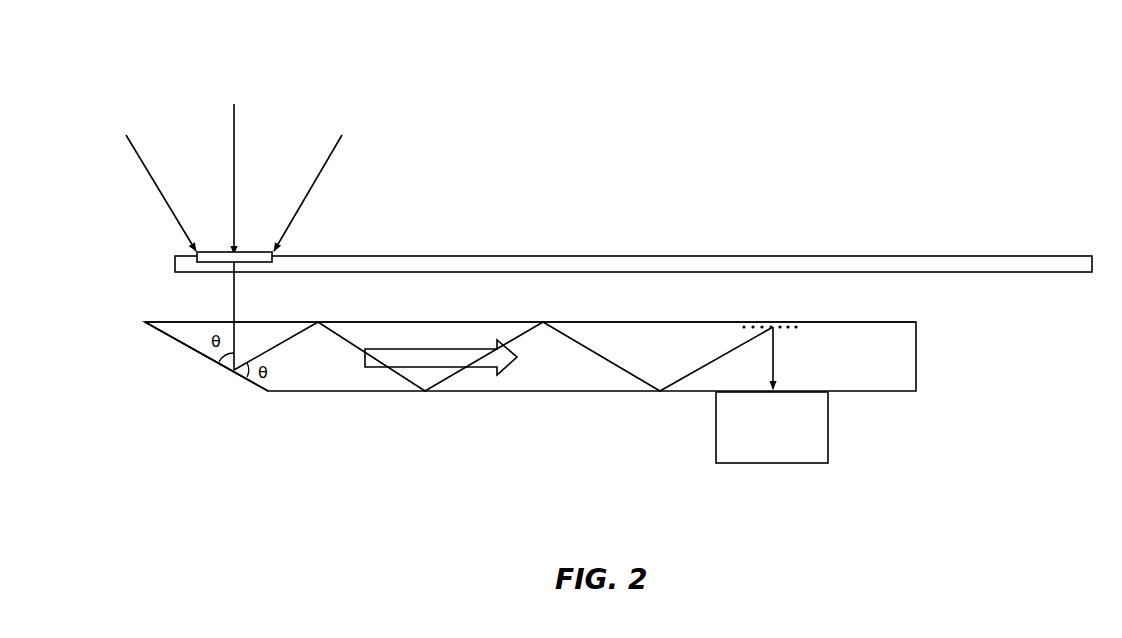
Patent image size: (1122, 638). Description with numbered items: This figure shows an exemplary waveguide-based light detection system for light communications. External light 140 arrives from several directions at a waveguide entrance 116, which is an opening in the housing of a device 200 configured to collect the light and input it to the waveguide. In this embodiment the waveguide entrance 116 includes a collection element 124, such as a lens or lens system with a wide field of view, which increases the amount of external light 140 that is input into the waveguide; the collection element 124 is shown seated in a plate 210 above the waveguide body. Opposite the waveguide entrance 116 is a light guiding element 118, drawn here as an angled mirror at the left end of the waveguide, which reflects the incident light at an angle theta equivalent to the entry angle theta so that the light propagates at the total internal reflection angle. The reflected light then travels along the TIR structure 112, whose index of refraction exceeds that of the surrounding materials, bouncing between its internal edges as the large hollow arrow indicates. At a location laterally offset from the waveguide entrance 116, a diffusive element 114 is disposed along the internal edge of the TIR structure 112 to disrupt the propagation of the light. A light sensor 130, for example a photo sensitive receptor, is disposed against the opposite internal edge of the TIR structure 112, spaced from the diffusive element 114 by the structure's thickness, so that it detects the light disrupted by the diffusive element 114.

The light 140 is at (448, 78).
The collection element 124 is at (252, 256).
The cover plate 210 is at (922, 255).
The device 200 is at (999, 323).
The waveguide entrance 116 is at (213, 287).
The light guiding element 118 is at (225, 379).
The TIR structure 112 is at (475, 384).
The diffusive element 114 is at (787, 331).
The light sensor 130 is at (788, 446).